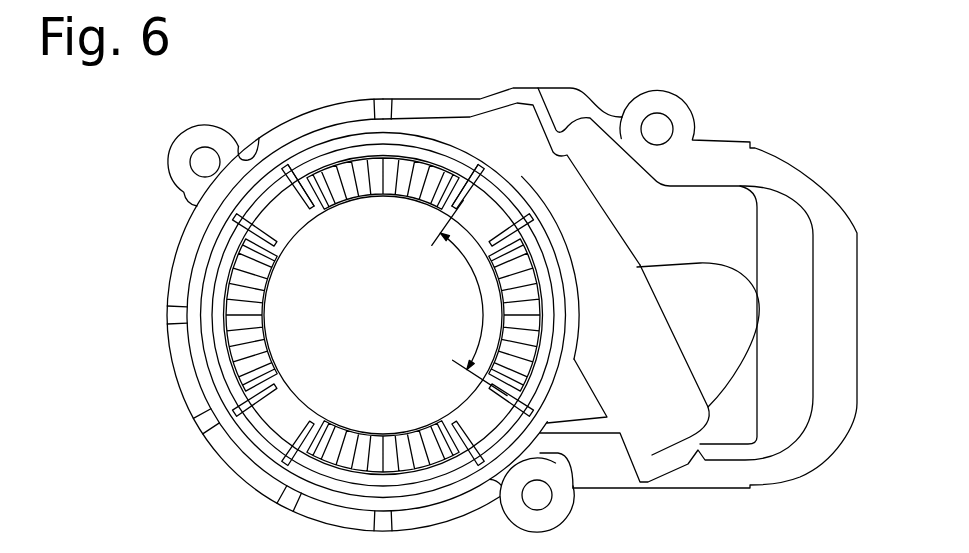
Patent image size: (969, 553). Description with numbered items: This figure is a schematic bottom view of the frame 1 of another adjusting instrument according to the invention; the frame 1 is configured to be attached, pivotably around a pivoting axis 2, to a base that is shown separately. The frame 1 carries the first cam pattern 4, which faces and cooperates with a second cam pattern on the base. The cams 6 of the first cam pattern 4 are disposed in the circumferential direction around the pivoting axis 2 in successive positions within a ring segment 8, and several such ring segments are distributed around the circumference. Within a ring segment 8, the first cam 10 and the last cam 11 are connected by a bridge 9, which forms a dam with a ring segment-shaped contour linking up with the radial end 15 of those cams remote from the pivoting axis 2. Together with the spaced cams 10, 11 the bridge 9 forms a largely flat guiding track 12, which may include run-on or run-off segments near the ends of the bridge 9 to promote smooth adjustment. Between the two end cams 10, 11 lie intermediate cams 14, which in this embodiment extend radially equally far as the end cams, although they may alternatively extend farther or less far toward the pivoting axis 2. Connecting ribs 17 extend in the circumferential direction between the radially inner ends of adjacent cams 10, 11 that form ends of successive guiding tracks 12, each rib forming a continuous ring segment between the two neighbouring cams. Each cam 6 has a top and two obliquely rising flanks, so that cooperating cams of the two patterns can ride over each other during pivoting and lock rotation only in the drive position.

The frame 1 is at (703, 95).
The pivoting axis 2 is at (384, 312).
The first cam pattern 4 is at (552, 322).
The cams 6 is at (240, 339).
The ring segment 8 is at (469, 297).
The bridge 9 is at (318, 165).
The first cam 10 is at (315, 198).
The last cam 11 is at (460, 178).
The guiding track 12 is at (452, 155).
The intermediate cams 14 is at (363, 177).
The radial end 15 is at (247, 242).
The connecting ribs 17 is at (287, 223).